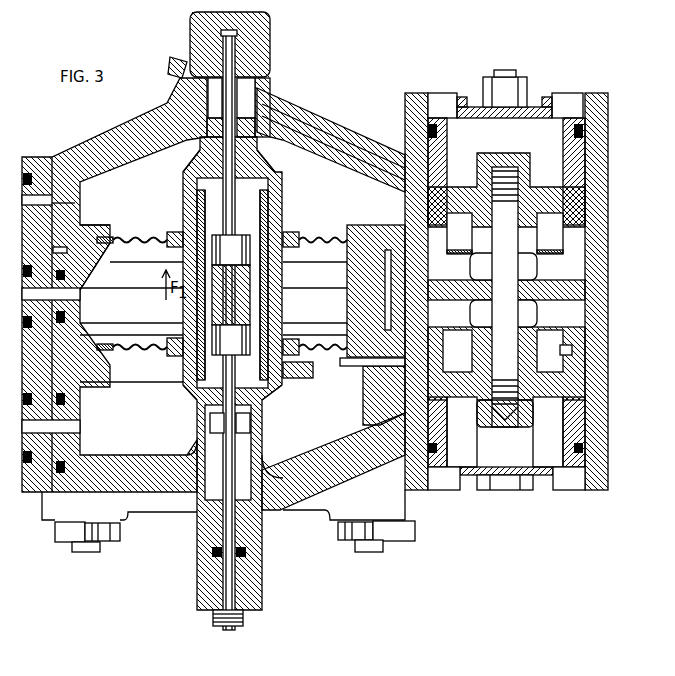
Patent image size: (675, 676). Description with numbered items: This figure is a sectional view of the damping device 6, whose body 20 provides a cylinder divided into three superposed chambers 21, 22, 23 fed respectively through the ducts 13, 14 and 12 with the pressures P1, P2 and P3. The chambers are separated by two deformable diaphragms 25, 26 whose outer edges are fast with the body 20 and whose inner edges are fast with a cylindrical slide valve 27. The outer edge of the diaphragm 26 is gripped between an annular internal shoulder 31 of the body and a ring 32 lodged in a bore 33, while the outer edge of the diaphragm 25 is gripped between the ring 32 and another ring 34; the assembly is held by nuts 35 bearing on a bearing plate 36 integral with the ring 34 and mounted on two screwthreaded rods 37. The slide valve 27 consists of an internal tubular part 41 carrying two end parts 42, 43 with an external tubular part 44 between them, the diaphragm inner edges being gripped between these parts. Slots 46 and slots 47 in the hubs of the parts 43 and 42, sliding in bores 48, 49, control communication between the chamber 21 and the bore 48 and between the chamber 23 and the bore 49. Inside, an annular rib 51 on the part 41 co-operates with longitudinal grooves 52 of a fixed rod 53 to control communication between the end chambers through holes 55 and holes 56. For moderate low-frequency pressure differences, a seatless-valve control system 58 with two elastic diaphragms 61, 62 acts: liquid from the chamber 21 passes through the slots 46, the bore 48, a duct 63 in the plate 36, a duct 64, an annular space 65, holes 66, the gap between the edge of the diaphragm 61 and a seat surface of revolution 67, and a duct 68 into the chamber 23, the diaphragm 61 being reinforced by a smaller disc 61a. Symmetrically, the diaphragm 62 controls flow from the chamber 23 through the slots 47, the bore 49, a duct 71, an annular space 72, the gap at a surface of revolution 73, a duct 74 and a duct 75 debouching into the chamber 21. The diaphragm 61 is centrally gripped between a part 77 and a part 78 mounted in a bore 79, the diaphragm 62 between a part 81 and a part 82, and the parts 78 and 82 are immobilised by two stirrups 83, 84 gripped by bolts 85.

The damping device 6 is at (337, 68).
The duct 12 is at (54, 203).
The duct 13 is at (52, 430).
The duct 14 is at (80, 300).
The body 20 is at (127, 137).
The chamber 21 is at (136, 419).
The chamber 22 is at (136, 307).
The chamber 23 is at (139, 191).
The deformable diaphragm 25 is at (330, 340).
The deformable diaphragm 26 is at (326, 236).
The cylindrical slide valve 27 is at (284, 186).
The annular internal shoulder 31 is at (110, 237).
The ring 32 is at (92, 284).
The bore 33 is at (72, 207).
The ring 34 is at (92, 366).
The nuts 35 is at (120, 530).
The bearing plate 36 is at (137, 464).
The screwthreaded rods 37 is at (100, 548).
The internal tubular part 41 is at (268, 320).
The end part 42 is at (270, 205).
The end part 43 is at (298, 373).
The external tubular part 44 is at (270, 284).
The slots 46 is at (250, 424).
The slots 47 is at (206, 138).
The cylindrical bore 48 is at (193, 450).
The cylindrical bore 49 is at (250, 90).
The annular rib 51 is at (183, 325).
The longitudinal grooves 52 is at (270, 258).
The rod 53 is at (199, 240).
The holes 55 is at (197, 392).
The holes 56 is at (262, 172).
The seatless-valve control system 58 is at (573, 70).
The elastic diaphragm 61 is at (506, 276).
The disc 61a is at (548, 333).
The elastic diaphragm 62 is at (556, 256).
The duct 63 is at (341, 443).
The duct 64 is at (395, 406).
The annular space 65 is at (456, 403).
The holes 66 is at (572, 350).
The surface of revolution 67 is at (464, 332).
The duct 68 is at (472, 326).
The duct 71 is at (332, 140).
The annular space 72 is at (585, 165).
The surface of revolution 73 is at (470, 255).
The duct 74 is at (478, 265).
The duct 75 is at (362, 362).
The part 77 is at (536, 318).
The part 78 is at (565, 425).
The bore 79 is at (580, 492).
The part 81 is at (537, 270).
The part 82 is at (566, 150).
The stirrup 83 is at (545, 490).
The stirrup 84 is at (477, 112).
The bolts 85 is at (497, 75).